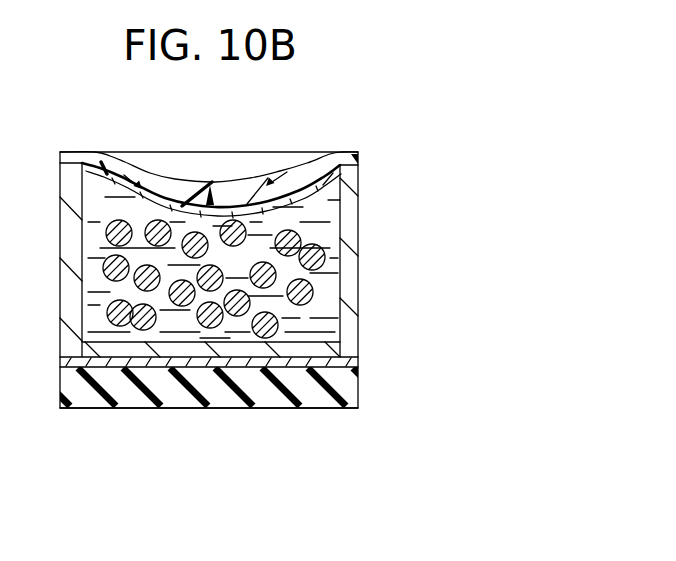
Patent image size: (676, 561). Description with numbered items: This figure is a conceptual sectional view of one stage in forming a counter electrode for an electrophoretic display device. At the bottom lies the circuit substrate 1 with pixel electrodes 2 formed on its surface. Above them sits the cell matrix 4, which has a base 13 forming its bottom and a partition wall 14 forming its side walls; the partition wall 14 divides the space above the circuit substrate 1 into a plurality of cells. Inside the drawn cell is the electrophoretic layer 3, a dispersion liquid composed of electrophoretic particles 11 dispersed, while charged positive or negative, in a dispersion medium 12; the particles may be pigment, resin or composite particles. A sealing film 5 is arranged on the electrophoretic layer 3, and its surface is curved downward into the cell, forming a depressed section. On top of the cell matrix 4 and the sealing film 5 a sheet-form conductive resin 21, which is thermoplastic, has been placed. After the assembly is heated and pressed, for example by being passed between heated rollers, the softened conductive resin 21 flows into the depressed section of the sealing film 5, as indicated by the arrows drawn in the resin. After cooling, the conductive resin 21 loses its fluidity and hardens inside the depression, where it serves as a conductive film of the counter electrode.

The circuit substrate 1 is at (306, 395).
The pixel electrodes 2 is at (256, 362).
The electrophoretic layer 3 is at (214, 356).
The cell matrix 4 is at (271, 280).
The sealing film 5 is at (303, 162).
The electrophoretic particles 11 is at (207, 326).
The dispersion medium 12 is at (165, 318).
The base 13 is at (315, 347).
The partition wall 14 is at (349, 221).
The conductive resin 21 is at (173, 178).